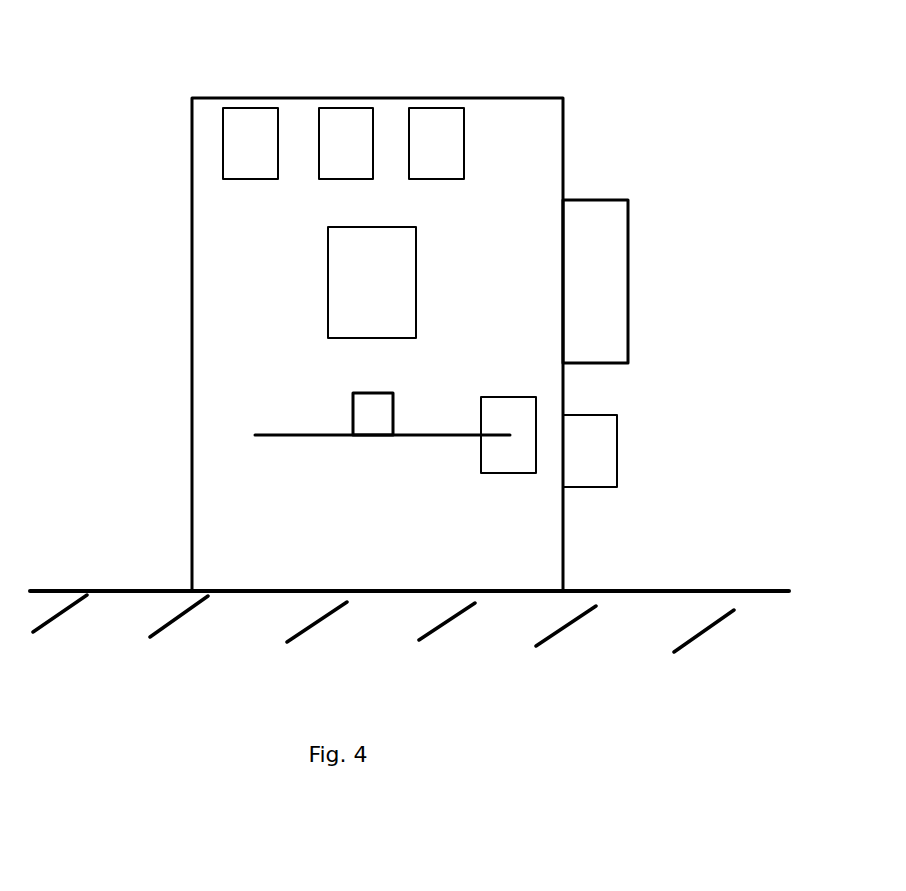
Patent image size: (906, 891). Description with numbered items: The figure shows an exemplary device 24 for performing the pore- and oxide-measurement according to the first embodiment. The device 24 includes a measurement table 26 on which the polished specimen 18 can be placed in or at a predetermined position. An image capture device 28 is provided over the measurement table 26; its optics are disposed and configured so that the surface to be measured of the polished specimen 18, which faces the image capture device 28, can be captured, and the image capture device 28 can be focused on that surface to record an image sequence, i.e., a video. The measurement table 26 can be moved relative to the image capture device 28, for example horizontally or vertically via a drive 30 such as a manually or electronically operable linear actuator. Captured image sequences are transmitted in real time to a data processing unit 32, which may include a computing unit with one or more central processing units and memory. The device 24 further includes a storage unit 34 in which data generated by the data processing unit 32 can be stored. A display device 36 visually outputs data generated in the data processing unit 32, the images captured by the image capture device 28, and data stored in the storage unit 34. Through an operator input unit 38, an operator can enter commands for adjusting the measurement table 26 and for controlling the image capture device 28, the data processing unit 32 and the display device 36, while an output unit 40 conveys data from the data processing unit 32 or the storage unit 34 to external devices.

The polished specimen 18 is at (377, 417).
The device 24 is at (547, 553).
The measurement table 26 is at (270, 437).
The image capture device 28 is at (390, 260).
The drive 30 is at (484, 455).
The data processing unit 32 is at (247, 122).
The storage unit 34 is at (347, 125).
The display device 36 is at (606, 283).
The operator input unit 38 is at (598, 458).
The output unit 40 is at (439, 125).